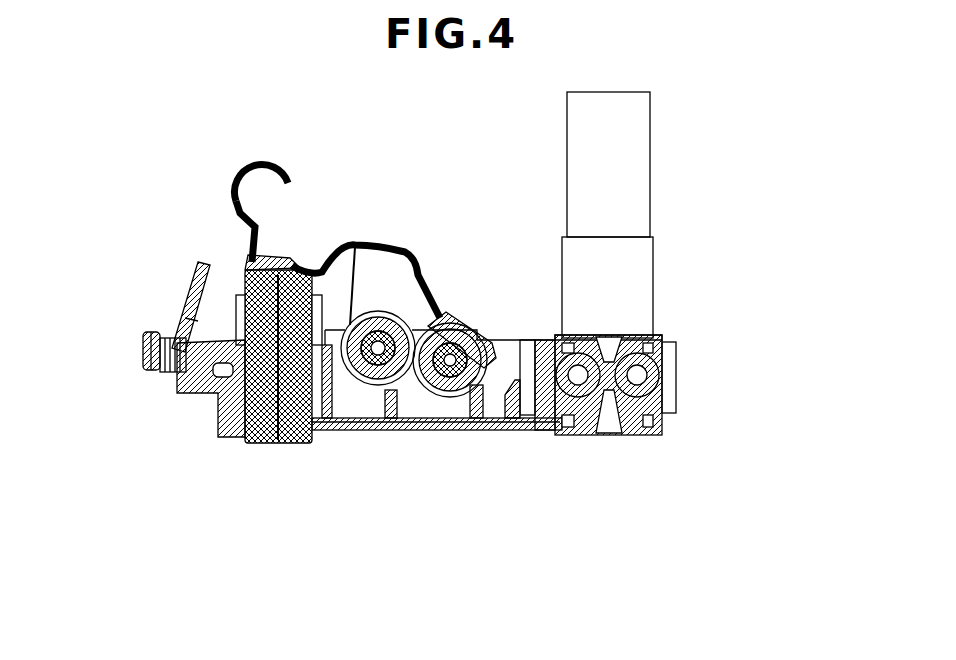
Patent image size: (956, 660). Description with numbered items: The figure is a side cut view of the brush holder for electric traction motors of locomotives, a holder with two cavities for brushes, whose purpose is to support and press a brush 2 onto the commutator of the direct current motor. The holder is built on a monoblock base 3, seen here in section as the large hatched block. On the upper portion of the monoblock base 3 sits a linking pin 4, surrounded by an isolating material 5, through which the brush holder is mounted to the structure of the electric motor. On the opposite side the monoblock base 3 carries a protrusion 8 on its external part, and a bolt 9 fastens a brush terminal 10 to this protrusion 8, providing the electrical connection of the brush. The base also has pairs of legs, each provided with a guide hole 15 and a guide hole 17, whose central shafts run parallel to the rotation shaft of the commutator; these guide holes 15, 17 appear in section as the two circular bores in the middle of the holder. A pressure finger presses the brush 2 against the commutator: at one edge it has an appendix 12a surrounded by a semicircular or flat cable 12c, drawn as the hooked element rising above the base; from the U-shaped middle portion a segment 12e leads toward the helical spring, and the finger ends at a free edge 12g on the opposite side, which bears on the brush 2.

The brush 2 is at (292, 428).
The monoblock base 3 is at (527, 427).
The linking pin 4 is at (634, 170).
The isolating material 5 is at (634, 273).
The protrusion 8 is at (197, 390).
The bolt 9 is at (143, 355).
The brush terminal 10 is at (185, 297).
The appendix 12a is at (250, 252).
The semicircular or flat cable 12c is at (240, 172).
The segment 12e is at (360, 250).
The free edge 12g is at (462, 327).
The guide hole 15 is at (358, 410).
The guide hole 17 is at (432, 410).